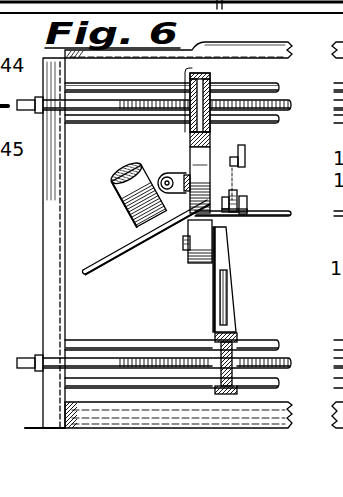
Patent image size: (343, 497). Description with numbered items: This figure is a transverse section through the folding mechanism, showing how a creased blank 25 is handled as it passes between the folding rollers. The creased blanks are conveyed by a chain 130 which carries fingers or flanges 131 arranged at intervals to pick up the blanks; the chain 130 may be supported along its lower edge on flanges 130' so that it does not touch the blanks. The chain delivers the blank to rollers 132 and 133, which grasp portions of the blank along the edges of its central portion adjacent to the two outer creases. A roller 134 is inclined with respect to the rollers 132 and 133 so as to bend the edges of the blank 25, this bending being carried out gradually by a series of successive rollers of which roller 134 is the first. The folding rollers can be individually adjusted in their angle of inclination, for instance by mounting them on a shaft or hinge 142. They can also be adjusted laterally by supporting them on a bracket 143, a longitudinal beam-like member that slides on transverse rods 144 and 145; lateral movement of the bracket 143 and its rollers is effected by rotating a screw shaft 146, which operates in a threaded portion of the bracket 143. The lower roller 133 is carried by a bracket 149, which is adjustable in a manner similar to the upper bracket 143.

The blank 25 is at (269, 217).
The chain 130 is at (255, 190).
The flanges 130' is at (255, 241).
The fingers or flanges 131 is at (250, 152).
The roller 132 is at (202, 167).
The roller 133 is at (193, 253).
The roller 134 is at (137, 197).
The shaft or hinge 142 is at (166, 177).
The bracket 143 is at (204, 98).
The transverse rod 144 is at (106, 88).
The transverse rod 145 is at (113, 123).
The screw shaft 146 is at (80, 120).
The bracket 149 is at (222, 310).